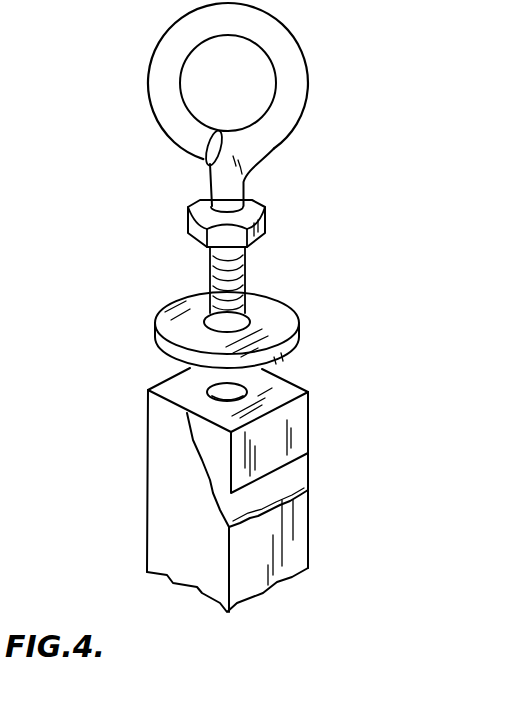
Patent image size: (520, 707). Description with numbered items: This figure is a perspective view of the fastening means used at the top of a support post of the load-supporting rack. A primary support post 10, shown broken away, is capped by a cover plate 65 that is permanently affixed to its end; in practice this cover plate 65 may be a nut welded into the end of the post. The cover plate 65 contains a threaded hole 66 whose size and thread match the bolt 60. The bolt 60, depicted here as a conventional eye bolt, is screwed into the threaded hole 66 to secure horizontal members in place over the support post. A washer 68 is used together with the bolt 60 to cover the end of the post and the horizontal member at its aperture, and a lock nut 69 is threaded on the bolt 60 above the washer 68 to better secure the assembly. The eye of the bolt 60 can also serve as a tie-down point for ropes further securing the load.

The primary support post 10 is at (148, 448).
The bolt 60 is at (302, 68).
The cover plate 65 is at (300, 390).
The threaded hole 66 is at (210, 384).
The washer 68 is at (295, 312).
The lock nut 69 is at (262, 203).